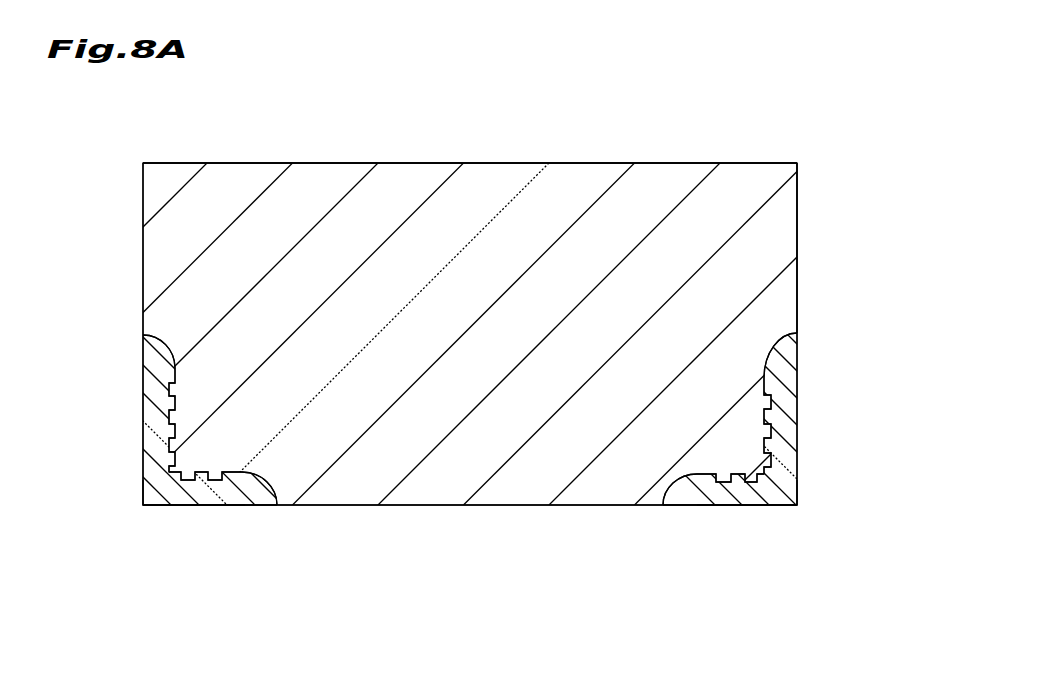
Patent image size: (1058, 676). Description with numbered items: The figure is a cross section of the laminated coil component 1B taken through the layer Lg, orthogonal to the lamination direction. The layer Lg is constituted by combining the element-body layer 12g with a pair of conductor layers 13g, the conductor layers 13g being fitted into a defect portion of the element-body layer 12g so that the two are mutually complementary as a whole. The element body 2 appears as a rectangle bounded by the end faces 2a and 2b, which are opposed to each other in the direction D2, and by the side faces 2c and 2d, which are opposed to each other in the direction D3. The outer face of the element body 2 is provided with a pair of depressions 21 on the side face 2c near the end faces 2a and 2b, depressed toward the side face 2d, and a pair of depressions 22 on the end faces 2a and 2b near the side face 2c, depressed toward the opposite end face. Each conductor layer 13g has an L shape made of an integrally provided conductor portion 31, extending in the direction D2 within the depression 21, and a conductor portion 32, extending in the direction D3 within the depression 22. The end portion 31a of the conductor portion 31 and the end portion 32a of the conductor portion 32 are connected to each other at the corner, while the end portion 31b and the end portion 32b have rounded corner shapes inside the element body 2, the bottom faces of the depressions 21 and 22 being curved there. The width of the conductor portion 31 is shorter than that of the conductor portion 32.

The laminated coil component 1B is at (715, 128).
The element body 2 is at (529, 296).
The end face 2a is at (142, 290).
The end face 2b is at (800, 288).
The side face 2c is at (470, 507).
The side face 2d is at (482, 162).
The element-body layer 12g is at (798, 235).
The conductor layer 13g is at (217, 507).
The depression 21 is at (245, 488).
The depression 22 is at (160, 368).
The conductor portion 31 is at (172, 518).
The end portion 31a is at (477, 525).
The end portion 31b is at (283, 516).
The conductor portion 32 is at (130, 458).
The end portion 32a is at (131, 514).
The end portion 32b is at (130, 337).
The layer Lg is at (587, 145).
The direction D2 is at (514, 620).
The direction D3 is at (918, 293).